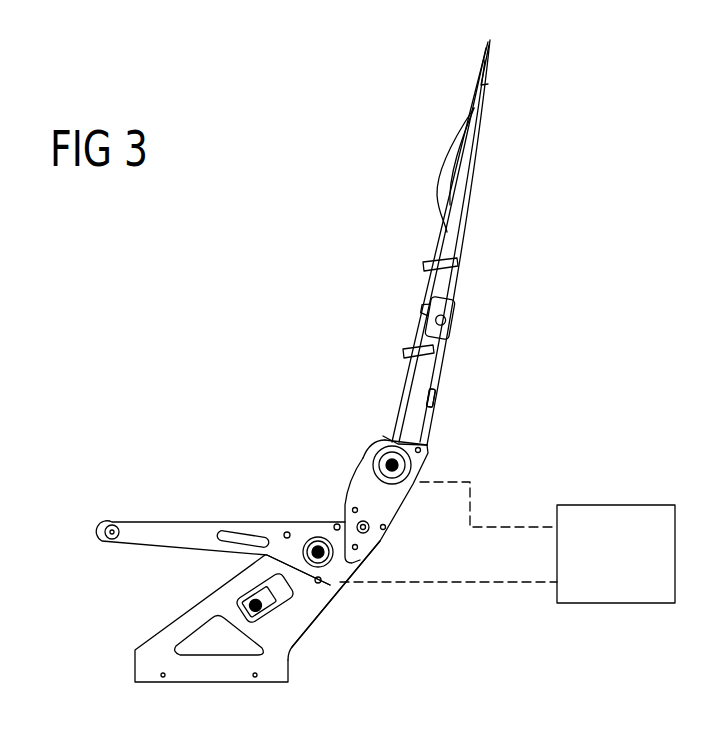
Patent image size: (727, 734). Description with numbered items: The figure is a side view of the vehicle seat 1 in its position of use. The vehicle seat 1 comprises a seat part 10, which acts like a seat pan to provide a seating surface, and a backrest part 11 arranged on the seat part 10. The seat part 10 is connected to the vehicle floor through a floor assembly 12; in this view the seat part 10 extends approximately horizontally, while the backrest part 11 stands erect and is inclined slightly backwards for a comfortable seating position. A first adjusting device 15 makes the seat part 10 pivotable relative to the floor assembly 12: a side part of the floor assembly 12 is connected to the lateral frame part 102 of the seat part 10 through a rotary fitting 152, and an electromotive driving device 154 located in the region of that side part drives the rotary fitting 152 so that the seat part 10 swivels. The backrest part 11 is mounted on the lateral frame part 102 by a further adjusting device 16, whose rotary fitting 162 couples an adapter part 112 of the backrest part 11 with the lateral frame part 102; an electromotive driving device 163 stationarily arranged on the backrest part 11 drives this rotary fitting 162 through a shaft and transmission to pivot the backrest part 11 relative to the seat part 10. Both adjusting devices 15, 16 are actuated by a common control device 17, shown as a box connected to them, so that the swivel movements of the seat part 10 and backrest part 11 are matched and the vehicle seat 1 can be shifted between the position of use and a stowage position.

The vehicle seat 1 is at (367, 155).
The seat part 10 is at (226, 521).
The backrest part 11 is at (463, 230).
The floor assembly 12 is at (140, 615).
The first adjusting device 15 is at (220, 562).
The adjusting device 16 is at (438, 460).
The control device 17 is at (613, 522).
The lateral frame part 102 is at (307, 527).
The adapter part 112 is at (455, 427).
The rotary fitting 152 is at (333, 578).
The electromotive driving device 154 is at (277, 583).
The rotary fitting 162 is at (397, 475).
The electromotive driving device 163 is at (433, 413).